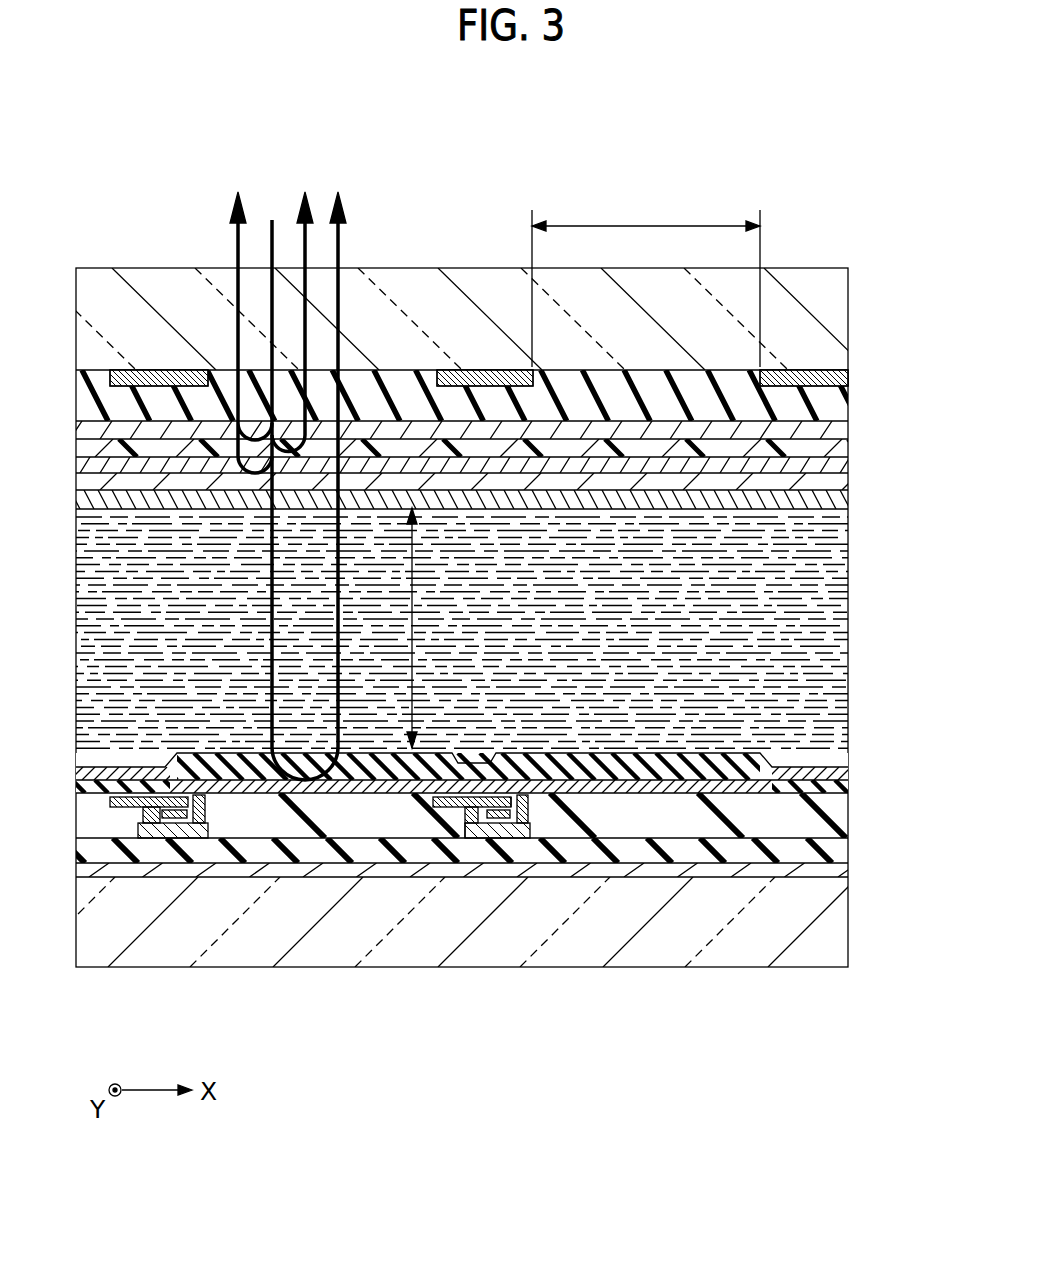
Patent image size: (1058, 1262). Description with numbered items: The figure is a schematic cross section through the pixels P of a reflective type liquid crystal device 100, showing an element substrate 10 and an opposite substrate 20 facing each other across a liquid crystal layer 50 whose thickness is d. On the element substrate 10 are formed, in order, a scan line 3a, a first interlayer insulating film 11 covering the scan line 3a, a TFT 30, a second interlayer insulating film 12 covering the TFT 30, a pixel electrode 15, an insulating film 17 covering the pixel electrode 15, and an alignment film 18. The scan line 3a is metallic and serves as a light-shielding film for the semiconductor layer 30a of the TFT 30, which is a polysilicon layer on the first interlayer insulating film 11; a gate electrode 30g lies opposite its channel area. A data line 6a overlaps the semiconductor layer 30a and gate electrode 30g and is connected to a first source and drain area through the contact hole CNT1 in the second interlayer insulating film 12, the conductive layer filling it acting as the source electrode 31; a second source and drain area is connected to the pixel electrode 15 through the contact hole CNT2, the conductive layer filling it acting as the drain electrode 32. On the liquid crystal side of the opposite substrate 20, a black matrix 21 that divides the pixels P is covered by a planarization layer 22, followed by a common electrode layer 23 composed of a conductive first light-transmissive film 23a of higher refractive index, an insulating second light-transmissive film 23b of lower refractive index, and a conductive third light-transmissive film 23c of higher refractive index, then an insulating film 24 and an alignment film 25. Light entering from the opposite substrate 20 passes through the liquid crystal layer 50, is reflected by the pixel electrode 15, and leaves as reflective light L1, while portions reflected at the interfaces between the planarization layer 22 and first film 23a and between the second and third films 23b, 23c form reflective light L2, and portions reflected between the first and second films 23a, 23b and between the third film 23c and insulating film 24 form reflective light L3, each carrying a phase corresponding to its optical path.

The liquid crystal device 100 is at (832, 162).
The element substrate 10 is at (835, 918).
The scan line 3a is at (835, 870).
The first interlayer insulating film 11 is at (840, 850).
The second interlayer insulating film 12 is at (840, 826).
The pixel electrode 15 is at (350, 795).
The insulating film 17 is at (840, 787).
The alignment film 18 is at (840, 766).
The opposite substrate 20 is at (838, 322).
The black matrix 21 is at (162, 372).
The planarization layer 22 is at (835, 402).
The common electrode layer 23 is at (513, 440).
The first light-transmissive film 23a is at (838, 428).
The second light-transmissive film 23b is at (838, 452).
The third light-transmissive film 23c is at (838, 462).
The insulating film 24 is at (835, 480).
The alignment film 25 is at (835, 500).
The liquid crystal layer 50 is at (840, 628).
The TFT 30 is at (385, 943).
The semiconductor layer 30a is at (205, 838).
The gate electrode 30g is at (478, 826).
The source electrode 31 is at (480, 840).
The drain electrode 32 is at (527, 812).
The data line 6a is at (432, 801).
The contact hole CNT1 is at (465, 826).
The contact hole CNT2 is at (530, 800).
The reflective light L1 is at (342, 208).
The reflective light L2 is at (310, 208).
The reflective light L3 is at (232, 208).
The pixel P is at (646, 281).
The thickness of the liquid crystal layer d is at (421, 628).